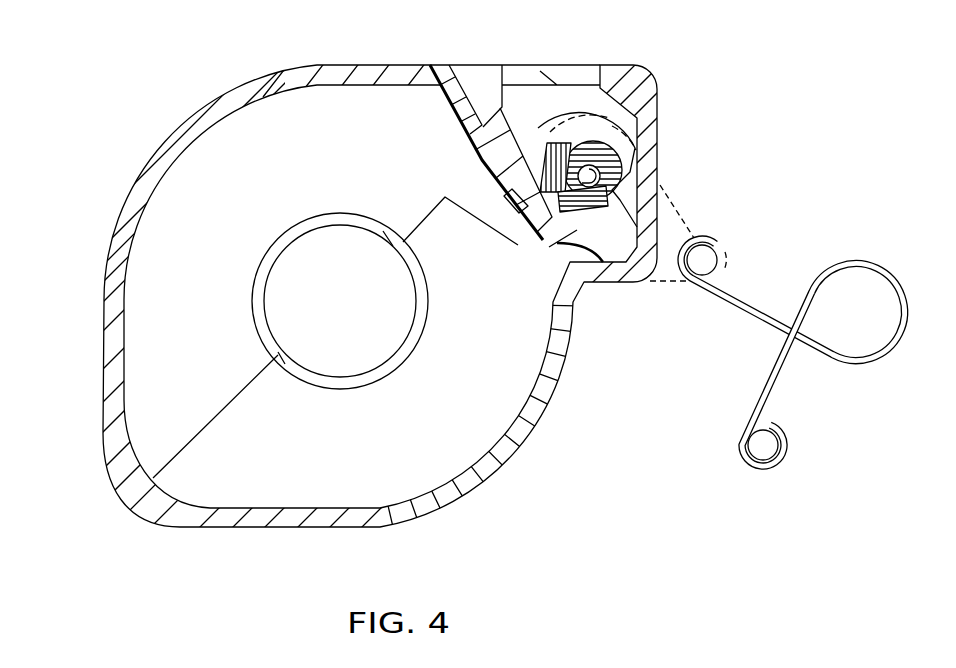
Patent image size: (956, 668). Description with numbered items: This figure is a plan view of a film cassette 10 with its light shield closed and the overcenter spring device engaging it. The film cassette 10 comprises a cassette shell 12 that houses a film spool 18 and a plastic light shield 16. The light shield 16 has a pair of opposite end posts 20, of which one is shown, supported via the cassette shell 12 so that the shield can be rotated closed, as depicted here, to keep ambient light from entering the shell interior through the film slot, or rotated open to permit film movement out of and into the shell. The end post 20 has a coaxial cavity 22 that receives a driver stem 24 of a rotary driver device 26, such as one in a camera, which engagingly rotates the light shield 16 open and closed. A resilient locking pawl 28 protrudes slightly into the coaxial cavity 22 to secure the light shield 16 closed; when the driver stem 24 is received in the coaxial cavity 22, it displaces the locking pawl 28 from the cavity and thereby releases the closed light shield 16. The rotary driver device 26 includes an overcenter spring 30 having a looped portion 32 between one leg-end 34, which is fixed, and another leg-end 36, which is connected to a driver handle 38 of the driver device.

The film cassette 10 is at (126, 107).
The cassette shell 12 is at (144, 168).
The light shield 16 is at (634, 167).
The film spool 18 is at (267, 312).
The end post 20 is at (616, 188).
The coaxial cavity 22 is at (586, 150).
The driver stem 24 is at (594, 180).
The rotary driver device 26 is at (692, 218).
The locking pawl 28 is at (500, 162).
The overcenter spring 30 is at (798, 346).
The looped portion 32 is at (904, 306).
The leg-end 34 is at (739, 442).
The leg-end 36 is at (694, 290).
The driver handle 38 is at (560, 242).